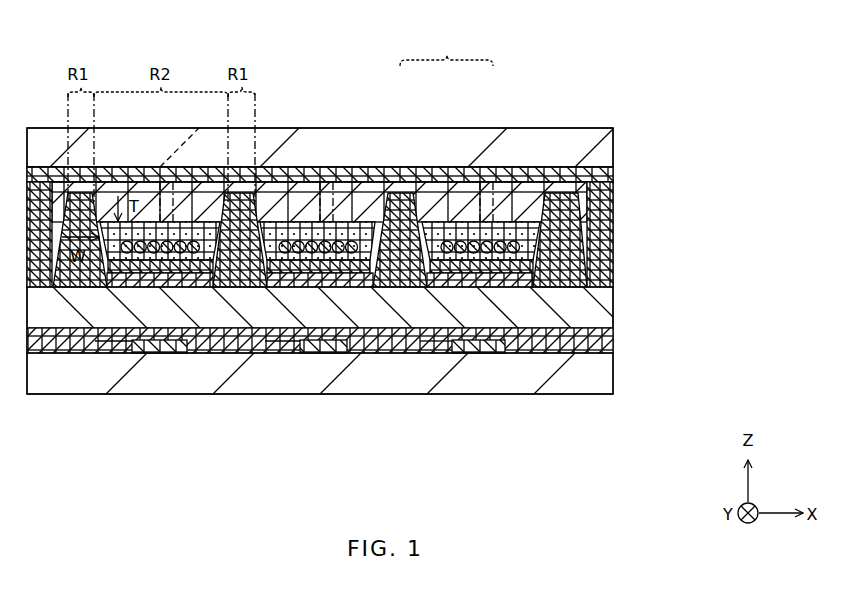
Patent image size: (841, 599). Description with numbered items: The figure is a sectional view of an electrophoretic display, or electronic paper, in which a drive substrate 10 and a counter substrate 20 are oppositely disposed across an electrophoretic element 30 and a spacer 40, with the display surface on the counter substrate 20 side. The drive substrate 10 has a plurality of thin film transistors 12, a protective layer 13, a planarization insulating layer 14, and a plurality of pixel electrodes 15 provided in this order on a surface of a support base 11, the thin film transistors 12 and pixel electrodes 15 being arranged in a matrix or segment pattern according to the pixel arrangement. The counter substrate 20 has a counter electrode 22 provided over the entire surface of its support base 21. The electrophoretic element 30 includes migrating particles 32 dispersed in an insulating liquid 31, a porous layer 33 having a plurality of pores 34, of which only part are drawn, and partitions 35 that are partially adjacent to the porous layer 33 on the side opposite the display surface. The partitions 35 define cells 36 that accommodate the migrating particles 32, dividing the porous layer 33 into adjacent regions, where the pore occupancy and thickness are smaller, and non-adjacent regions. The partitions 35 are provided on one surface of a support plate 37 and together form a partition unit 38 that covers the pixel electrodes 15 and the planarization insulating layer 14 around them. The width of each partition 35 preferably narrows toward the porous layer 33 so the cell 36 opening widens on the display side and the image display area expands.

The drive substrate 10 is at (596, 422).
The support base 11 is at (44, 388).
The thin film transistors 12 is at (162, 346).
The protective layer 13 is at (110, 350).
The planarization insulating layer 14 is at (268, 312).
The pixel electrodes 15 is at (533, 278).
The counter substrate 20 is at (648, 100).
The support base 21 is at (44, 130).
The counter electrode 22 is at (353, 180).
The electrophoretic element 30 is at (582, 206).
The insulating liquid 31 is at (372, 278).
The migrating particles 32 is at (287, 244).
The porous layer 33 is at (562, 172).
The pores 34 is at (500, 198).
The partitions 35 is at (428, 255).
The cells 36 is at (613, 338).
The support plate 37 is at (443, 220).
The partition unit 38 is at (446, 46).
The spacer 40 is at (613, 288).